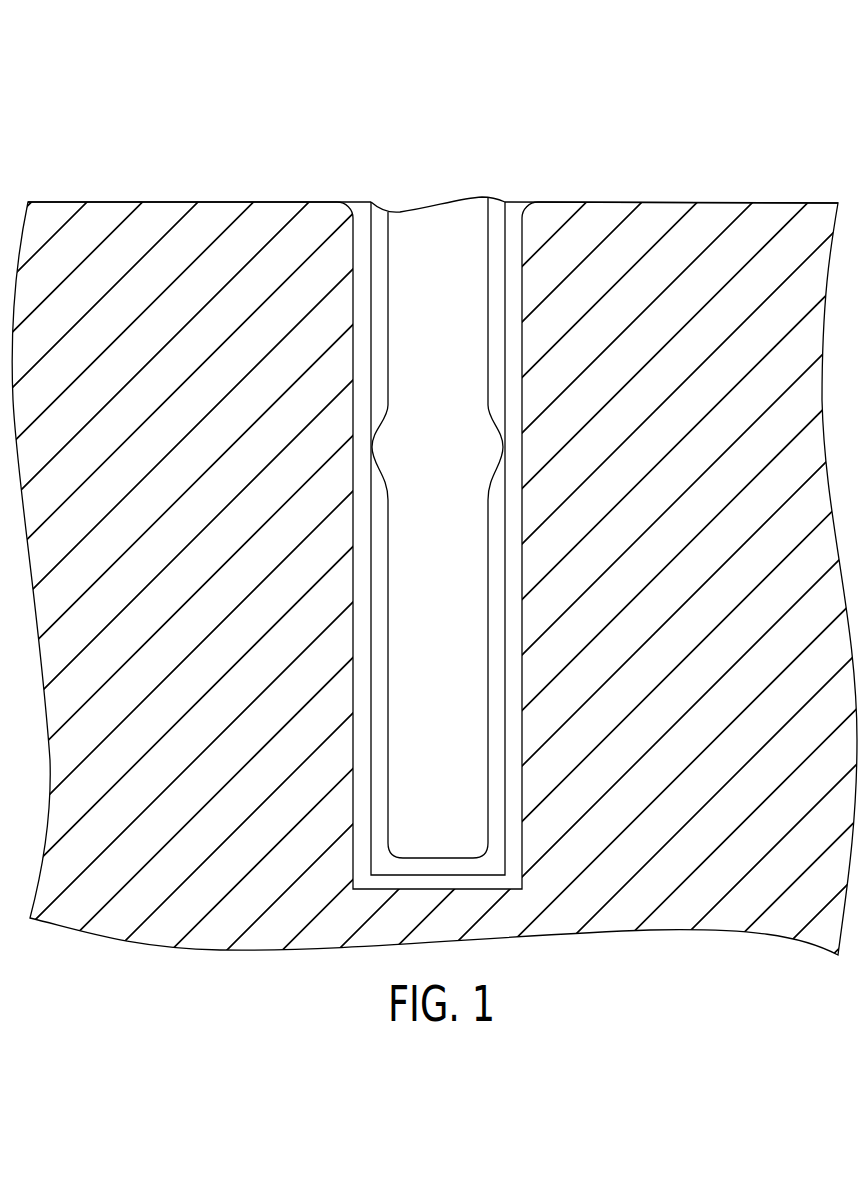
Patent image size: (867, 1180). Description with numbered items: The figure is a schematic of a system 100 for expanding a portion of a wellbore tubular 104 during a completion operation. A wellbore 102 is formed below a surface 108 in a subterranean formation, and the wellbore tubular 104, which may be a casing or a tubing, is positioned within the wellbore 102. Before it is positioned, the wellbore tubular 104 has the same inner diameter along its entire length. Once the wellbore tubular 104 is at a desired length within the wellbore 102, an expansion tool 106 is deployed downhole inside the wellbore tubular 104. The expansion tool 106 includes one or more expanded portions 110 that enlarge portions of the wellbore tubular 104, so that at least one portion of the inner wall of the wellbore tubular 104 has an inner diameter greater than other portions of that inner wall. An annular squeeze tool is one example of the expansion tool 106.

The system 100 is at (433, 550).
The wellbore 102 is at (523, 458).
The wellbore tubular 104 is at (506, 749).
The expansion tool 106 is at (490, 678).
The surface 108 is at (708, 203).
The expanded portions 110 is at (375, 435).